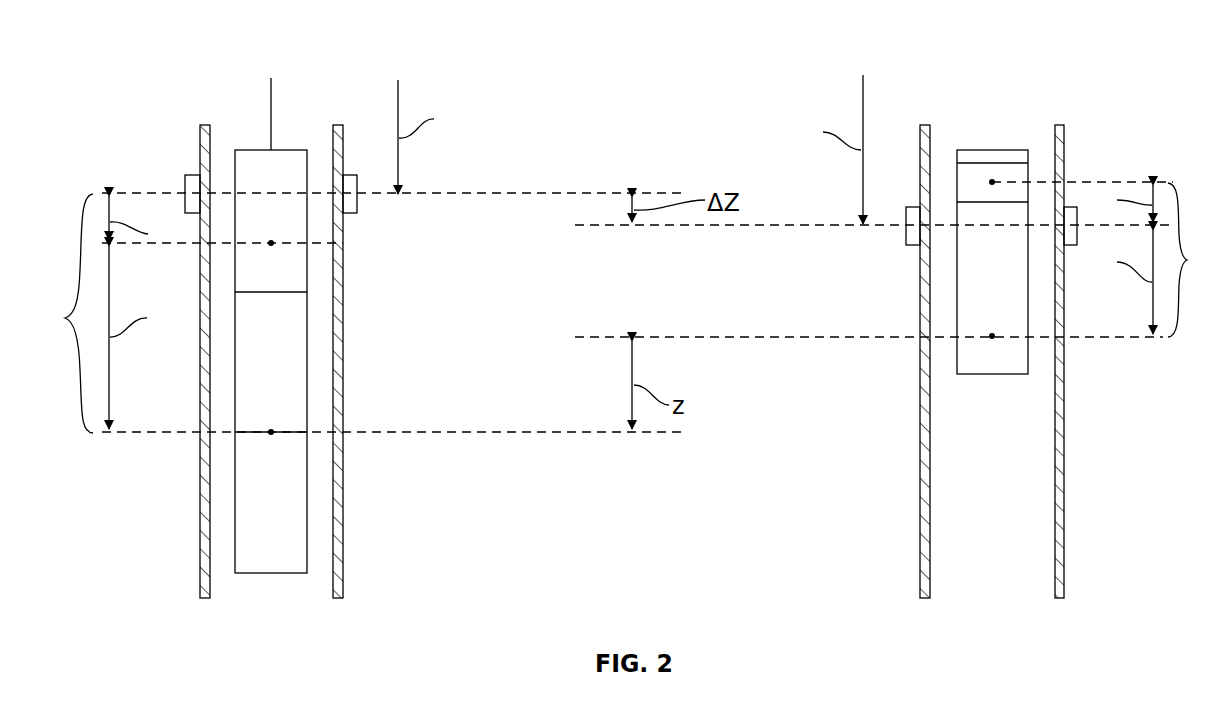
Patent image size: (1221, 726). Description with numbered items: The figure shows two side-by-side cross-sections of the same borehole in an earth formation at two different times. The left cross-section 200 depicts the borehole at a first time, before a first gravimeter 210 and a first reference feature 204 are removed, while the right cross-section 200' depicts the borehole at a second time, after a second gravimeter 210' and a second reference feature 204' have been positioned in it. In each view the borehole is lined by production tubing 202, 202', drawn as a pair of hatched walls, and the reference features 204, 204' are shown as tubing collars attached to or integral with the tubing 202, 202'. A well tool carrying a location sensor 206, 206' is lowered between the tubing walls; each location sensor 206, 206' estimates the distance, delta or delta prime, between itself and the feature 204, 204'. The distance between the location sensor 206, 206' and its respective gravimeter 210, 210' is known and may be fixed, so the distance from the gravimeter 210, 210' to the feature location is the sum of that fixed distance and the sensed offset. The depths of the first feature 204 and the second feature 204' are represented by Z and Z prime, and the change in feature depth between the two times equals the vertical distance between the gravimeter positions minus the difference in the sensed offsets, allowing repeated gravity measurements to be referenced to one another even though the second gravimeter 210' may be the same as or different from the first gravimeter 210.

The cross-section 200 is at (366, 229).
The production tubing 202 is at (313, 361).
The first reference feature 204 is at (242, 178).
The location sensor 206 is at (331, 325).
The first gravimeter 210 is at (343, 466).
The cross-section 200' is at (1008, 181).
The production tubing 202' is at (1037, 361).
The second reference feature 204' is at (1031, 195).
The location sensor 206' is at (994, 241).
The second gravimeter 210' is at (986, 379).